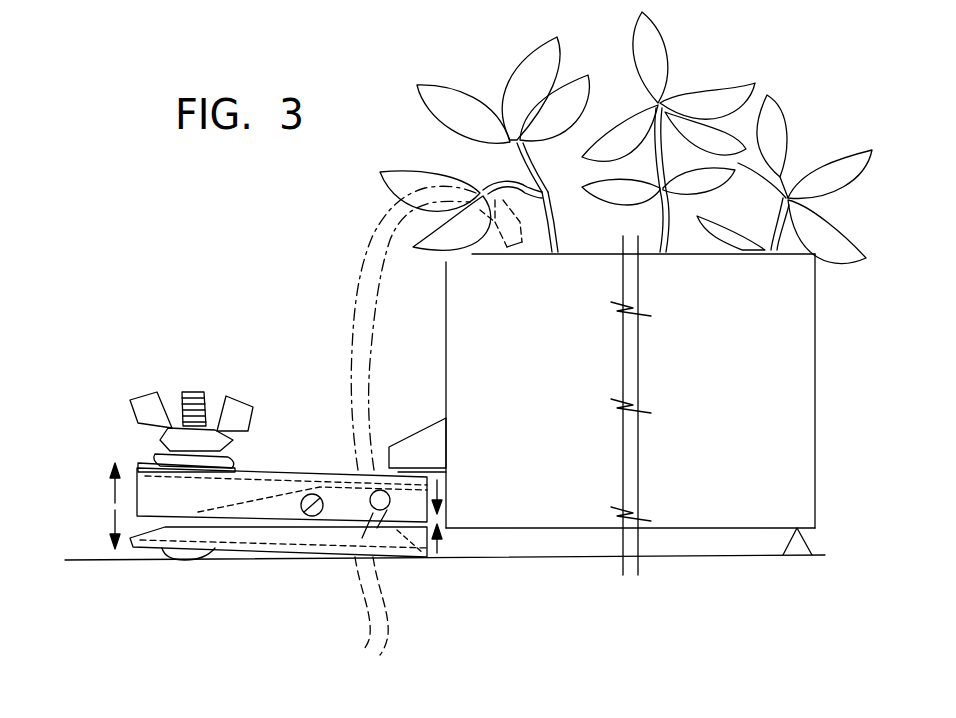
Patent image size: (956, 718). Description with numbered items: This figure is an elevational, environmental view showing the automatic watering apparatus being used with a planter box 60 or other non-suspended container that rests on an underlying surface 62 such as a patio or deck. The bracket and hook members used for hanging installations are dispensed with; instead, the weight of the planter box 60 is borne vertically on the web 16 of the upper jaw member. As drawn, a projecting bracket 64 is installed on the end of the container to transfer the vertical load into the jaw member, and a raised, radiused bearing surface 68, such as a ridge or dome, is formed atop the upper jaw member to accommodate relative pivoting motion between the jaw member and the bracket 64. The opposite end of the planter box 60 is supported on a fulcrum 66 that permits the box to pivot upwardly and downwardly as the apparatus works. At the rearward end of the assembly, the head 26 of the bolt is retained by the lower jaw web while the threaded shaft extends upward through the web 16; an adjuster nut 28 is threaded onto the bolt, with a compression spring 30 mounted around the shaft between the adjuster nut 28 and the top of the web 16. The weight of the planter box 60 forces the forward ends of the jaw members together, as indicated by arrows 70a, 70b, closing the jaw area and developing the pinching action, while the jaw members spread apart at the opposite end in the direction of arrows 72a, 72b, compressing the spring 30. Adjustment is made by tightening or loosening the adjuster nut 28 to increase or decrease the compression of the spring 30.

The upper web portion 16 is at (302, 468).
The head of the bolt 26 is at (177, 398).
The adjuster nut 28 is at (238, 398).
The compression spring 30 is at (150, 452).
The planter box 60 is at (537, 365).
The underlying surface 62 is at (673, 557).
The projecting bracket 64 is at (423, 432).
The fulcrum 66 is at (805, 540).
The raised radiused bearing surface 68 is at (377, 470).
The arrow 70a is at (445, 494).
The arrow 70b is at (446, 549).
The arrow 72a is at (110, 493).
The arrow 72b is at (110, 519).